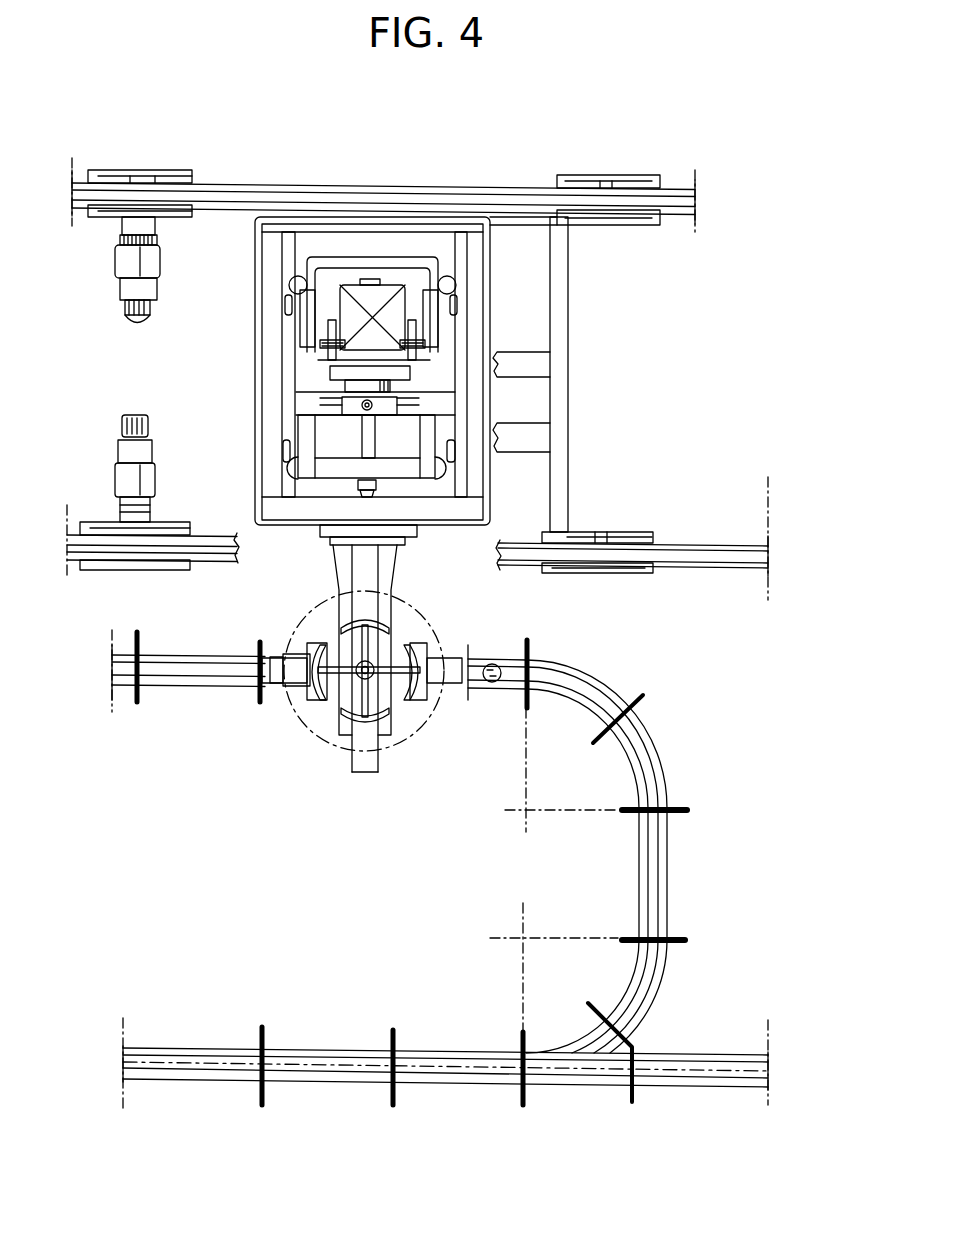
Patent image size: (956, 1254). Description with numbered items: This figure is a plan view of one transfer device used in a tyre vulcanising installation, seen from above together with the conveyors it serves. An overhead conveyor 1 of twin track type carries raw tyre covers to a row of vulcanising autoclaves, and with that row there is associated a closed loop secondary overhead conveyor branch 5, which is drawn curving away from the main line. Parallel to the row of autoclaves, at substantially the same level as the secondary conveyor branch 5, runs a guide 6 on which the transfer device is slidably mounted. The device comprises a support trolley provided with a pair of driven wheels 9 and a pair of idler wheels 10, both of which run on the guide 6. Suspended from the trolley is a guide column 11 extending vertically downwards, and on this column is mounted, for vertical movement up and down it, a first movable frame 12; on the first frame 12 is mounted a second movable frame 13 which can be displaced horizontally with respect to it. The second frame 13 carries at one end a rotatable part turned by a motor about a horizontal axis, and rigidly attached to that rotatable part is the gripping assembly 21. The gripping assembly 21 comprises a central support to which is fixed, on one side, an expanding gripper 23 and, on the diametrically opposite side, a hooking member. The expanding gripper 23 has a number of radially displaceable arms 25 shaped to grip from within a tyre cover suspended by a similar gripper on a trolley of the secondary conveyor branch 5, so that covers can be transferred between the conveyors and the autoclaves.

The overhead conveyor 1 is at (668, 1053).
The secondary overhead conveyor branch 5 is at (668, 768).
The guide 6 is at (240, 188).
The driven wheels 9 is at (113, 172).
The idler wheels 10 is at (622, 183).
The guide column 11 is at (380, 290).
The first movable frame 12 is at (437, 373).
The second movable frame 13 is at (479, 278).
The gripping assembly 21 is at (438, 612).
The expanding gripper 23 is at (398, 720).
The radially displaceable arms 25 is at (414, 705).